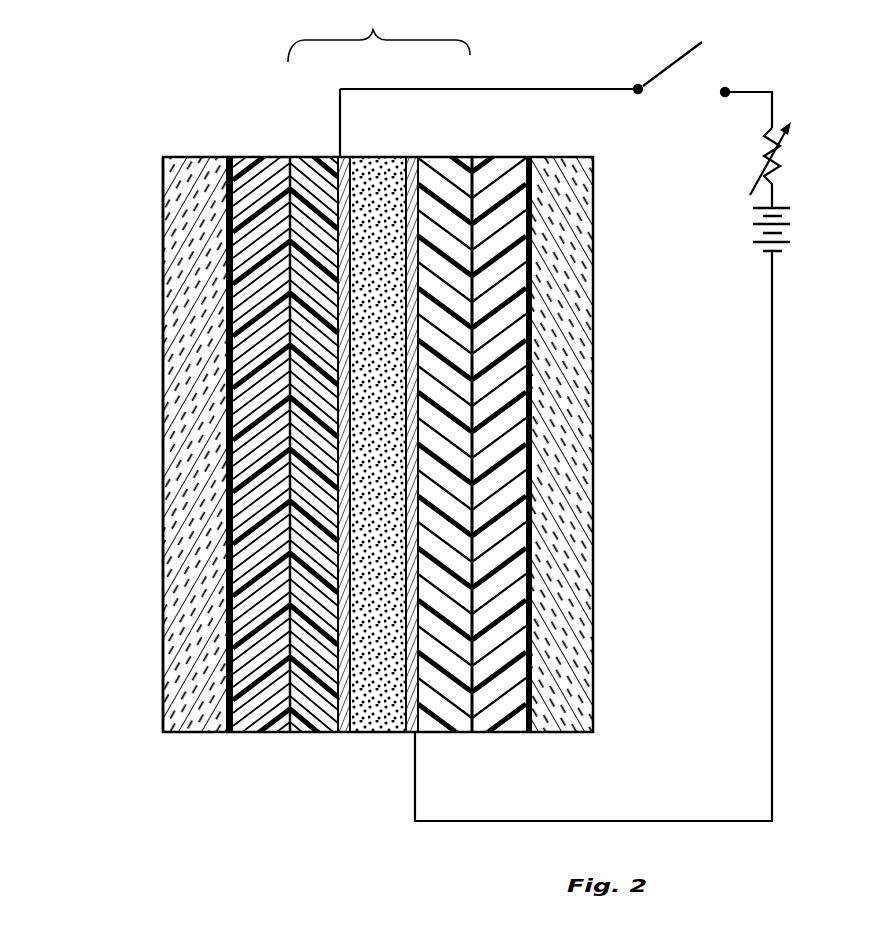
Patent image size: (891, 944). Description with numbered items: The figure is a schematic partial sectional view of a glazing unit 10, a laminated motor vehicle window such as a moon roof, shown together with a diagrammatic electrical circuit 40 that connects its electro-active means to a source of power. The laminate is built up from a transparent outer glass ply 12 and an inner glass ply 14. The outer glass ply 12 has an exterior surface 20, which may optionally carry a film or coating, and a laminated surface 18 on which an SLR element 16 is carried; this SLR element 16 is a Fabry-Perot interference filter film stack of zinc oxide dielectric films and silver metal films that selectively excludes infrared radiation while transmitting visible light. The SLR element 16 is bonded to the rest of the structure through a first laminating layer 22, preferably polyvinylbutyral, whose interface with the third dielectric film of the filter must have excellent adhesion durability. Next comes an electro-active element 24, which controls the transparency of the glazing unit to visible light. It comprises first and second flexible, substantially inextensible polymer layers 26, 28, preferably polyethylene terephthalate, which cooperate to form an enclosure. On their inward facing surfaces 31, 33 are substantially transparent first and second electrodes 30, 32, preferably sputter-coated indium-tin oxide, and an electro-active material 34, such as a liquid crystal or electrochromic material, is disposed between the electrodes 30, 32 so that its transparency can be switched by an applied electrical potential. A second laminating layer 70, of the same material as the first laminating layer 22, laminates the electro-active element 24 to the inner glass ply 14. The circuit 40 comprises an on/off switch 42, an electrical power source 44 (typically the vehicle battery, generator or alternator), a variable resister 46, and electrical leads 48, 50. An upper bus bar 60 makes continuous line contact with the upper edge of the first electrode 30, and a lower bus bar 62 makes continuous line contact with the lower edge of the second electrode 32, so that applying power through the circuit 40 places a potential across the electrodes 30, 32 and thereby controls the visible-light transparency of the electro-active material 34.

The glazing unit 10 is at (210, 140).
The outer glass ply 12 is at (185, 425).
The inner glass ply 14 is at (570, 440).
The SLR element 16 is at (228, 157).
The laminated surface 18 is at (235, 730).
The exterior surface 20 is at (163, 343).
The laminating layer 22 is at (281, 160).
The electro-active element 24 is at (379, 32).
The first inextensible polymer layer 26 is at (313, 715).
The second inextensible polymer layer 28 is at (450, 718).
The first electrode 30 is at (343, 722).
The inward facing surface 31 is at (323, 733).
The second electrode 32 is at (401, 162).
The inward facing surface 33 is at (416, 160).
The electro-active material 34 is at (378, 720).
The circuit 40 is at (569, 82).
The on/off switch 42 is at (683, 53).
The electrical power source 44 is at (787, 233).
The variable resister 46 is at (780, 160).
The electrical lead 48 is at (505, 88).
The electrical lead 50 is at (775, 483).
The upper bus bar 60 is at (349, 160).
The lower bus bar 62 is at (410, 725).
The second laminating layer 70 is at (522, 685).